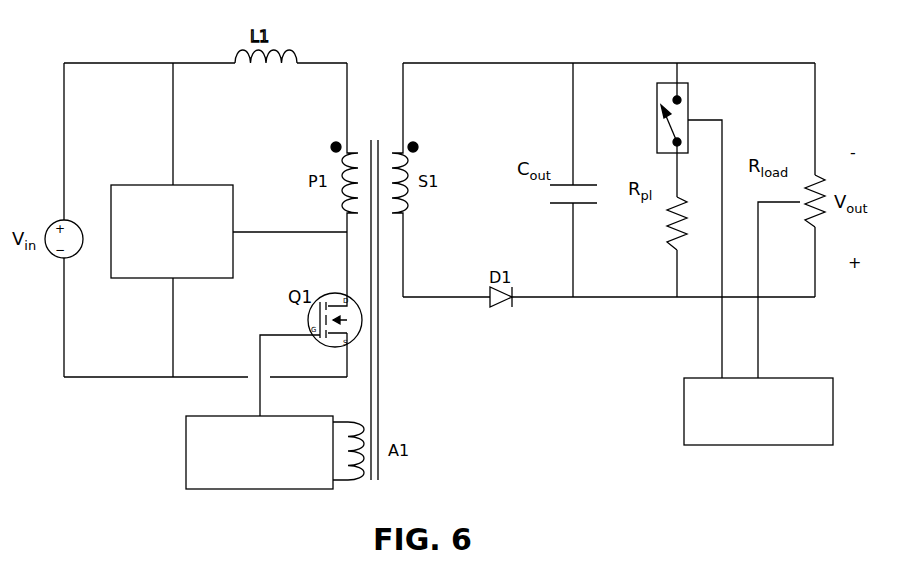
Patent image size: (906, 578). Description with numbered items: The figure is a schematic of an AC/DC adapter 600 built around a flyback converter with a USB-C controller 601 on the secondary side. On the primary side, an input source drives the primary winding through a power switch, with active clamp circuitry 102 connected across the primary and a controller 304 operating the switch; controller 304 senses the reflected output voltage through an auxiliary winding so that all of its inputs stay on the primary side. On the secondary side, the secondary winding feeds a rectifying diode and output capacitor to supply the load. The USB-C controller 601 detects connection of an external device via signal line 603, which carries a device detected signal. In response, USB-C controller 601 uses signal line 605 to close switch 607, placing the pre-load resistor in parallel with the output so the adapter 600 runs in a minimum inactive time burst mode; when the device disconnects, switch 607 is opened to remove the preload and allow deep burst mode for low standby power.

The active clamp circuitry 102 is at (202, 185).
The controller 304 is at (185, 441).
The switch 607 is at (693, 100).
The signal line 605 is at (720, 349).
The signal line 603 is at (760, 340).
The USB-C controller 601 is at (683, 412).
The AC/DC adapter 600 is at (630, 443).